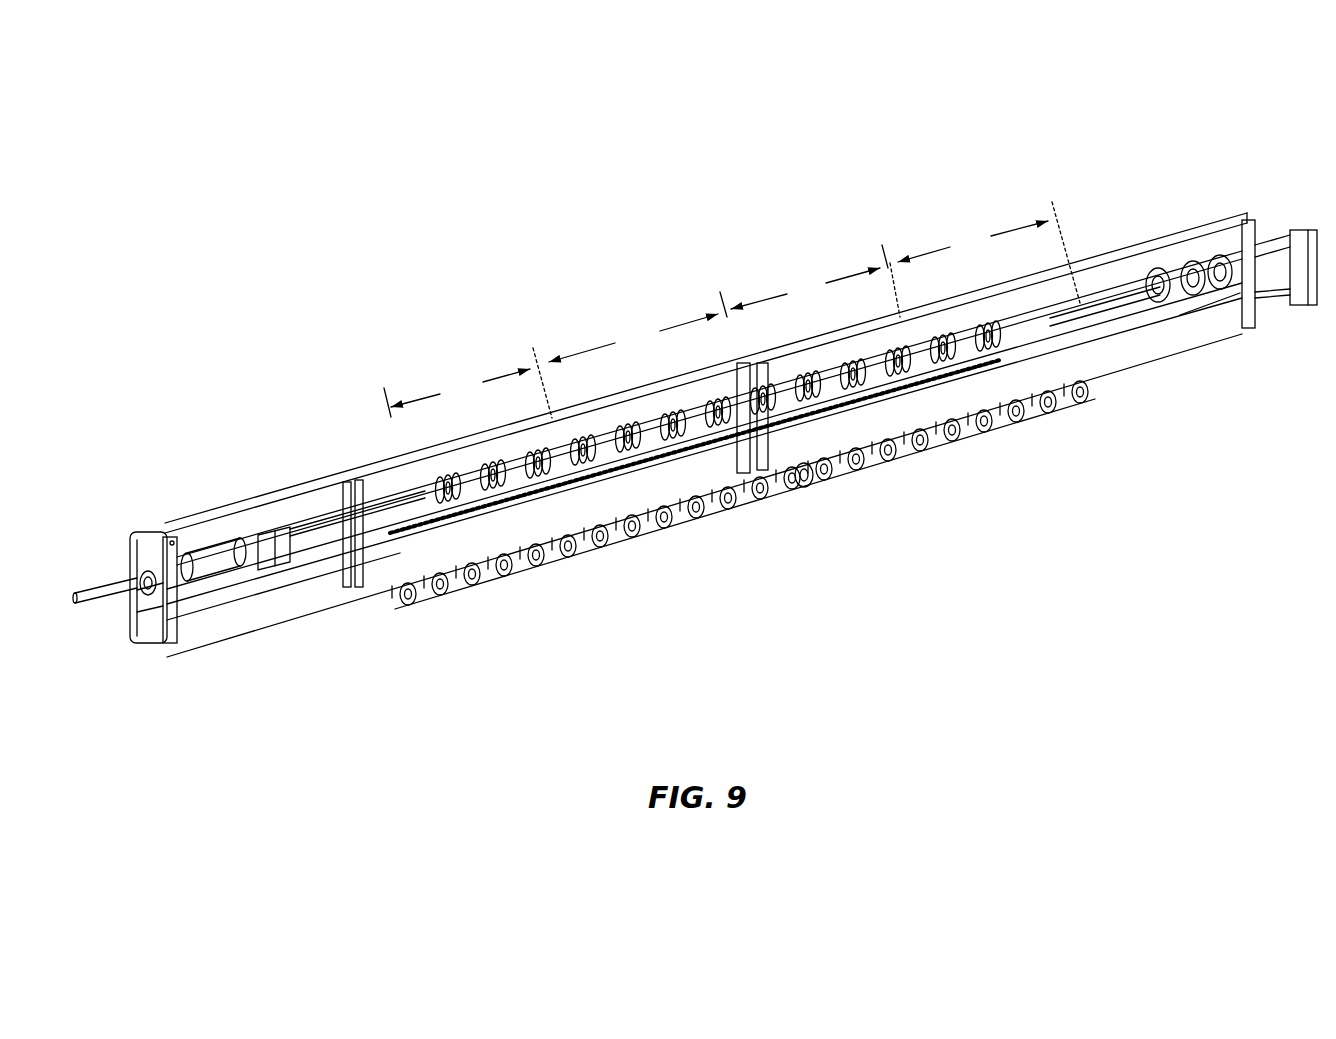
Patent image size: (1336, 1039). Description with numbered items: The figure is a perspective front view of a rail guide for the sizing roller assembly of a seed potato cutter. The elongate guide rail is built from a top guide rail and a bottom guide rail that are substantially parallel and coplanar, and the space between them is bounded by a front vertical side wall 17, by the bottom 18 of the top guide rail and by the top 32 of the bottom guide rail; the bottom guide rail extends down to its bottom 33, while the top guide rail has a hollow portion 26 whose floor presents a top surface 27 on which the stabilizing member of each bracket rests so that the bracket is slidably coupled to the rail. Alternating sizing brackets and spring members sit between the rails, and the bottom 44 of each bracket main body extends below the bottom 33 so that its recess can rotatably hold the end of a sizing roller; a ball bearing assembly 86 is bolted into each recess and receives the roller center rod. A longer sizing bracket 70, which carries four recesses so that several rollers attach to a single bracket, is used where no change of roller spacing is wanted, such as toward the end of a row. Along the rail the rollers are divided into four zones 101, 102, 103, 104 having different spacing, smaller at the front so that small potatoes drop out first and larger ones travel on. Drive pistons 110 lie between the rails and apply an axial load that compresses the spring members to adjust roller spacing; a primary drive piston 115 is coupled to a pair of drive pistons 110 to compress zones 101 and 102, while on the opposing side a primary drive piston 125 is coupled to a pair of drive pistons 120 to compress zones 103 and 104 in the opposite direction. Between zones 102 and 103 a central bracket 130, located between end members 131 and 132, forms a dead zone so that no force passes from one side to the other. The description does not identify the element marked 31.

The front vertical side wall 17 is at (303, 500).
The bottom of the top guide rail 18 is at (263, 537).
The hollow portion of the top guide rail 26 is at (133, 535).
The top surface of the bottom of the top guide rail 27 is at (143, 552).
The end post 31 is at (148, 635).
The top of the bottom guide rail 32 is at (207, 600).
The bottom of the bottom rail 33 is at (313, 606).
The bottom of the main body 44 is at (398, 588).
The sizing bracket 70 is at (1053, 310).
The ball bearing assembly 86 is at (480, 590).
The first zone 101 is at (468, 383).
The second zone 102 is at (638, 327).
The third zone 103 is at (815, 281).
The fourth zone 104 is at (989, 252).
The drive piston 110 is at (513, 498).
The primary drive piston 115 is at (207, 563).
The drive pistons 120 is at (1120, 295).
The primary drive piston 125 is at (1192, 250).
The central bracket 130 is at (752, 362).
The end member 131 is at (748, 442).
The end member 132 is at (785, 432).